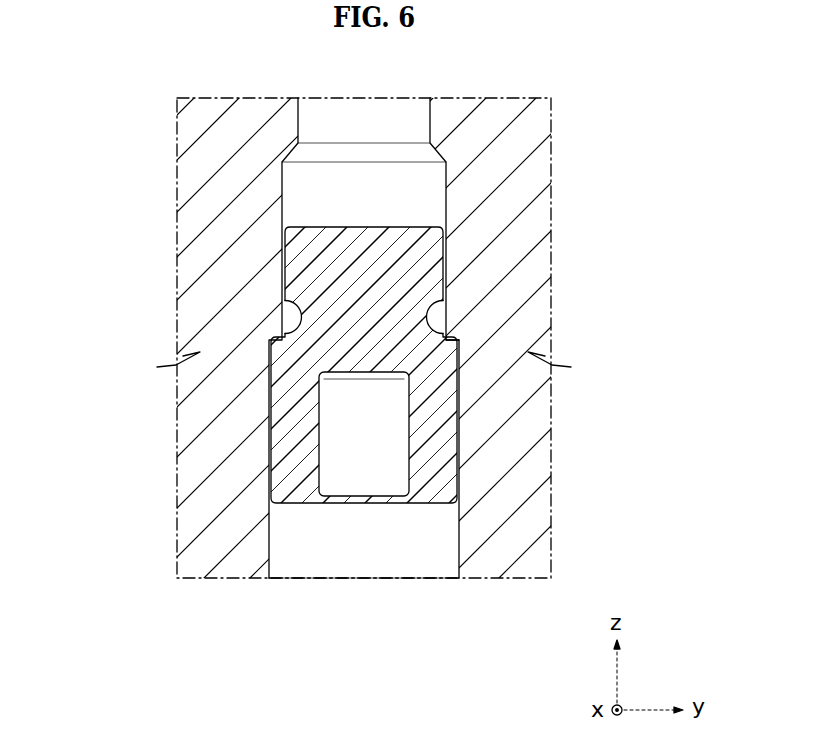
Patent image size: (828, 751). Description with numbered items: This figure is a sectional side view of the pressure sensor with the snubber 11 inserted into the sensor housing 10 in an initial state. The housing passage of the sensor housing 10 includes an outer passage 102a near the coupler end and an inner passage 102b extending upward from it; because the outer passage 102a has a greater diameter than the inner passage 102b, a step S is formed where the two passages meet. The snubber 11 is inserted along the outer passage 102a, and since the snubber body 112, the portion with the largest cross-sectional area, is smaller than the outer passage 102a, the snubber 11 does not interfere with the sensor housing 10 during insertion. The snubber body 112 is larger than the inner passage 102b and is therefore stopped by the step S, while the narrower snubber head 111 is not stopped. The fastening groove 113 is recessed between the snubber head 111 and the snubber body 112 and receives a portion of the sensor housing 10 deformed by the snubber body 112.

The sensor housing 10 is at (208, 155).
The snubber 11 is at (247, 365).
The snubber head 111 is at (303, 268).
The fastening groove 113 is at (295, 318).
The snubber body 112 is at (288, 417).
The inner passage 102b is at (361, 206).
The outer passage 102a is at (373, 557).
The step S is at (450, 336).